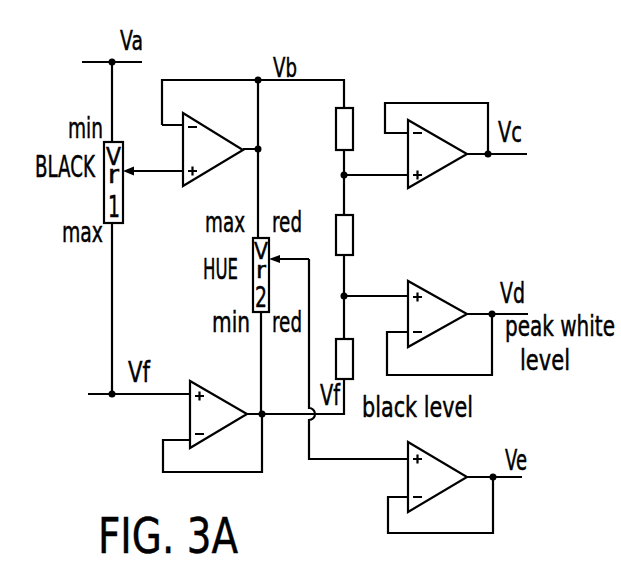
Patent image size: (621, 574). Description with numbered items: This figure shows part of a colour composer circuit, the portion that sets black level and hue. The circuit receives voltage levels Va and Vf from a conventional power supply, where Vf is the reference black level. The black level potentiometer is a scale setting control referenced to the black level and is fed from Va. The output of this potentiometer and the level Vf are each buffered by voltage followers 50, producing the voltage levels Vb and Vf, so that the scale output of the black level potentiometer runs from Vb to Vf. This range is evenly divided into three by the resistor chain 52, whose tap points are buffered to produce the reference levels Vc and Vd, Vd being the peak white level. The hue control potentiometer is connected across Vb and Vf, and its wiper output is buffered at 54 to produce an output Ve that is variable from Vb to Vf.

The voltage followers 50 is at (208, 160).
The resistor chain 52 is at (348, 60).
The buffer 54 is at (432, 464).